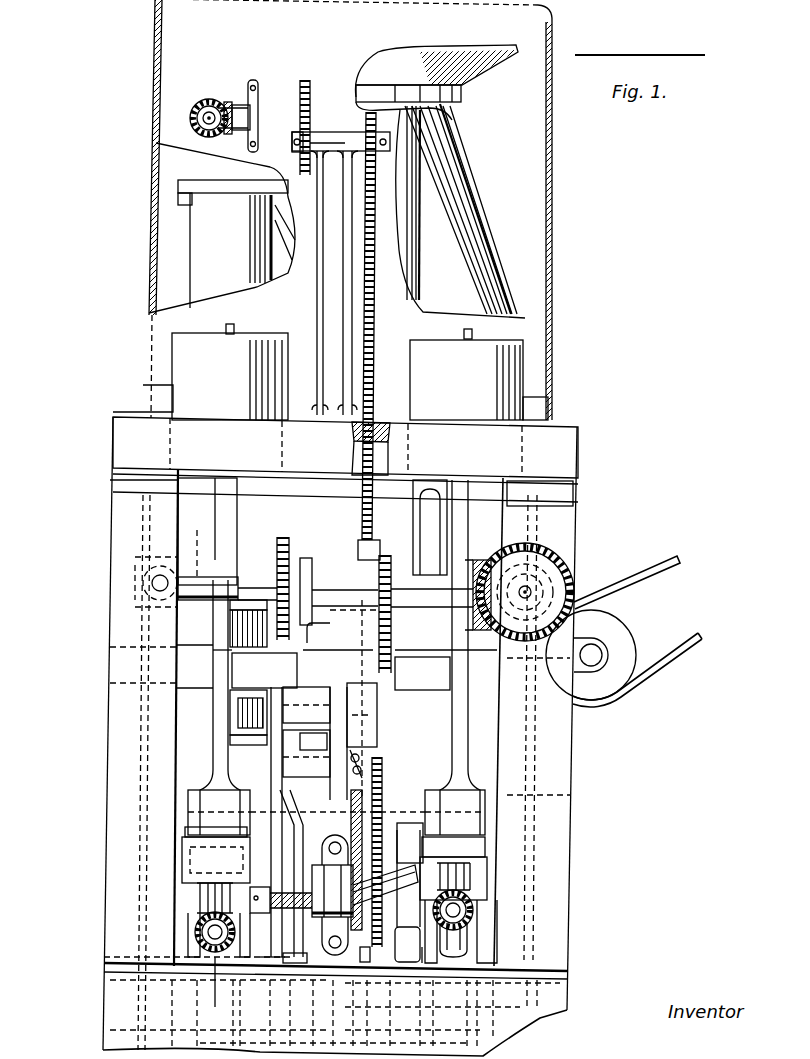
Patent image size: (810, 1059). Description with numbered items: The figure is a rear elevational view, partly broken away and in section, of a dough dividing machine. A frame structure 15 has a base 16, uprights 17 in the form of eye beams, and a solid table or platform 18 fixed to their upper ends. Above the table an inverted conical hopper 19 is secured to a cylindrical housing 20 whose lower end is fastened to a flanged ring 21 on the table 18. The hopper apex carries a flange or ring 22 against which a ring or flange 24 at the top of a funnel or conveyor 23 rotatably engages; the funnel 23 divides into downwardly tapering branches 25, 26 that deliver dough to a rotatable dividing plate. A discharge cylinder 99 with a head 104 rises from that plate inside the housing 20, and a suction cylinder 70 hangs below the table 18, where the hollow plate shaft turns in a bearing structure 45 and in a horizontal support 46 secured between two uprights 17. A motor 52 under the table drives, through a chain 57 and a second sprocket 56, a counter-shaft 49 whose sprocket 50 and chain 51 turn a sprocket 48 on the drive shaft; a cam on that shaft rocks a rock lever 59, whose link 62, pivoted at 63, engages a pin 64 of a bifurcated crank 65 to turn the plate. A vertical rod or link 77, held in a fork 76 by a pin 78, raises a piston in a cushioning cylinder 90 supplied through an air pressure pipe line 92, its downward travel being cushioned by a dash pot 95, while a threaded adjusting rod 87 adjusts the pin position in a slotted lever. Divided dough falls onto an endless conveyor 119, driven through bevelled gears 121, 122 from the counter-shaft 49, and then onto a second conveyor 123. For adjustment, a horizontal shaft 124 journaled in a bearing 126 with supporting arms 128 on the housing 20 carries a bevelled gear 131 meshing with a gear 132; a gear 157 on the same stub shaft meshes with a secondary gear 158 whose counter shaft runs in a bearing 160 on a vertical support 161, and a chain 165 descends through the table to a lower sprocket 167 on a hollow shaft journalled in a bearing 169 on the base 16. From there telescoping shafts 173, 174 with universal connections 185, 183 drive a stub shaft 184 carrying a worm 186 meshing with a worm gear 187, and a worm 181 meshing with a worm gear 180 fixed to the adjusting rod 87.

The frame structure 15 is at (562, 917).
The base 16 is at (198, 867).
The uprights 17 is at (565, 848).
The table or platform 18 is at (578, 458).
The conical hopper 19 is at (490, 70).
The cylindrical housing 20 is at (548, 183).
The flanged ring 21 is at (553, 413).
The flange or ring 22 is at (460, 96).
The funnel or conveyor 23 is at (500, 247).
The ring or flange 24 is at (455, 124).
The tapering branch 25 is at (470, 200).
The tapering branch 26 is at (418, 276).
The bearing structure 45 is at (382, 538).
The horizontal support 46 is at (430, 683).
The sprocket 48 is at (390, 830).
The counter-shaft 49 is at (193, 592).
The sprocket 50 is at (392, 570).
The chain or flexible member 51 is at (380, 812).
The motor 52 is at (324, 480).
The second sprocket 56 is at (277, 567).
The flexible member 57 is at (297, 538).
The rock lever 59 is at (285, 852).
The link 62 is at (240, 715).
The pivot 63 is at (300, 697).
The pin 64 is at (235, 757).
The crank 65 is at (260, 730).
The suction cylinder 70 is at (187, 624).
The fork 76 is at (200, 808).
The rod or link 77 is at (212, 707).
The pin 78 is at (125, 838).
The adjusting rod 87 is at (208, 932).
The cushioning cylinder 90 is at (415, 380).
The air pressure pipe line 92 is at (236, 330).
The dash pot 95 is at (182, 853).
The discharge cylinder 99 is at (203, 242).
The head 104 is at (197, 172).
The endless conveyor 119 is at (207, 531).
The bevelled gear 121 is at (575, 558).
The bevelled gear 122 is at (481, 560).
The second conveyor 123 is at (700, 660).
The adjusting shaft 124 is at (193, 118).
The bearing 126 is at (250, 117).
The supporting arms 128 is at (258, 103).
The bevelled gear 131 is at (200, 101).
The gear 132 is at (240, 100).
The gear 157 is at (305, 80).
The secondary gear 158 is at (298, 165).
The bearing 160 is at (327, 133).
The vertical support 161 is at (316, 297).
The chain or flexible member 165 is at (378, 213).
The lower sprocket 167 is at (365, 891).
The bearing 169 is at (322, 860).
The tubular shaft 173 is at (408, 896).
The telescoping shaft 174 is at (290, 930).
The worm gear 180 is at (197, 940).
The worm 181 is at (197, 881).
The universal connection 183 is at (263, 913).
The stub shaft 184 is at (420, 867).
The universal connection 185 is at (422, 930).
The worm 186 is at (473, 873).
The worm gear 187 is at (473, 900).